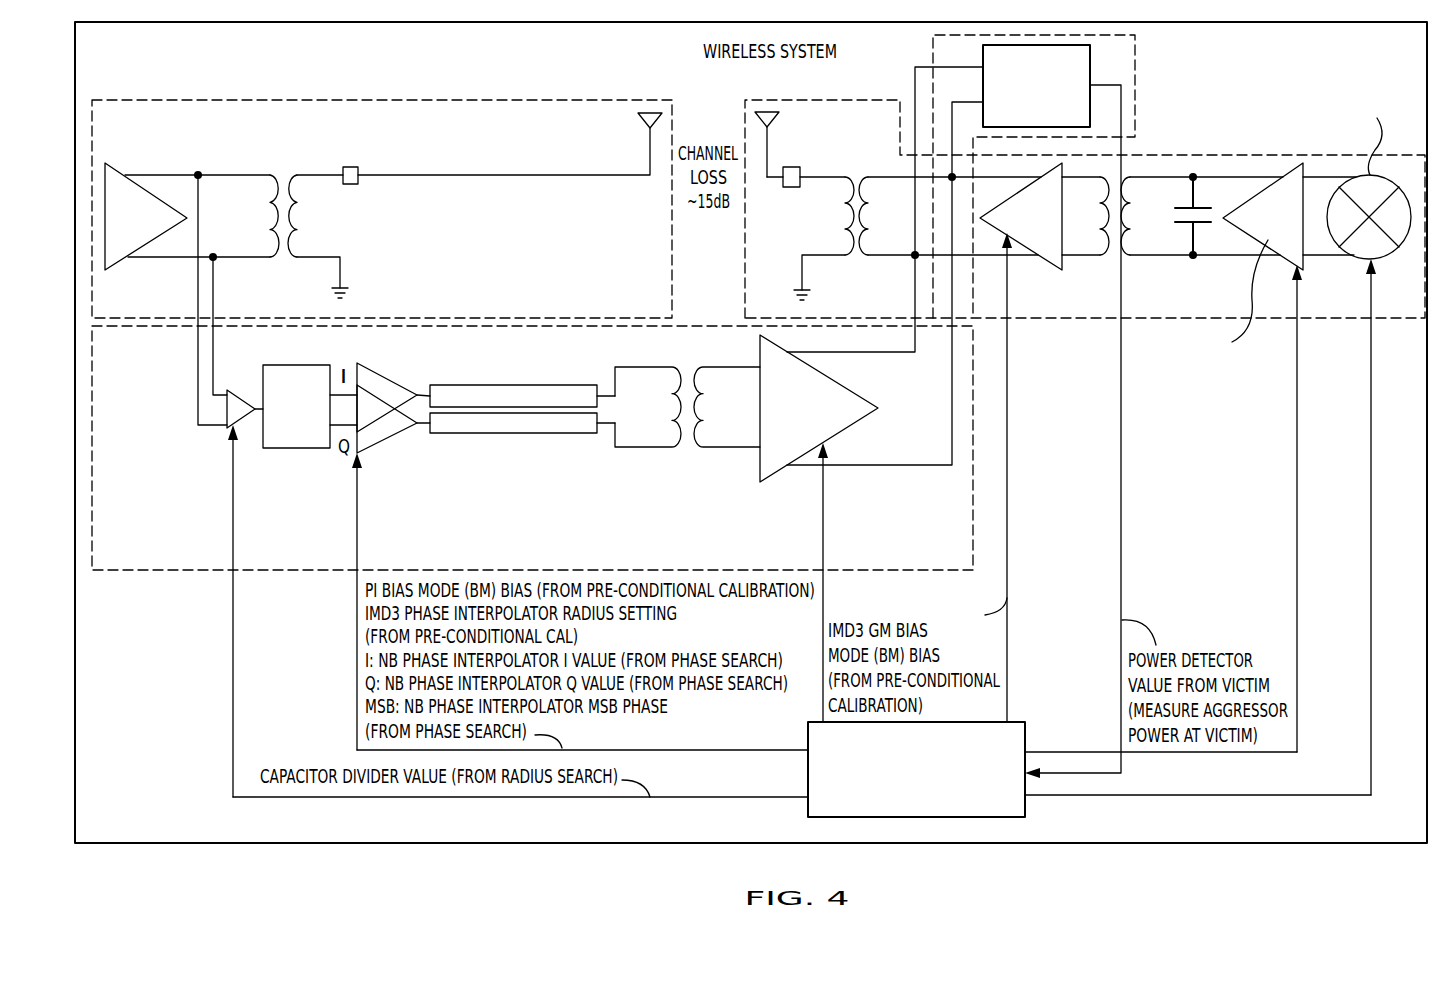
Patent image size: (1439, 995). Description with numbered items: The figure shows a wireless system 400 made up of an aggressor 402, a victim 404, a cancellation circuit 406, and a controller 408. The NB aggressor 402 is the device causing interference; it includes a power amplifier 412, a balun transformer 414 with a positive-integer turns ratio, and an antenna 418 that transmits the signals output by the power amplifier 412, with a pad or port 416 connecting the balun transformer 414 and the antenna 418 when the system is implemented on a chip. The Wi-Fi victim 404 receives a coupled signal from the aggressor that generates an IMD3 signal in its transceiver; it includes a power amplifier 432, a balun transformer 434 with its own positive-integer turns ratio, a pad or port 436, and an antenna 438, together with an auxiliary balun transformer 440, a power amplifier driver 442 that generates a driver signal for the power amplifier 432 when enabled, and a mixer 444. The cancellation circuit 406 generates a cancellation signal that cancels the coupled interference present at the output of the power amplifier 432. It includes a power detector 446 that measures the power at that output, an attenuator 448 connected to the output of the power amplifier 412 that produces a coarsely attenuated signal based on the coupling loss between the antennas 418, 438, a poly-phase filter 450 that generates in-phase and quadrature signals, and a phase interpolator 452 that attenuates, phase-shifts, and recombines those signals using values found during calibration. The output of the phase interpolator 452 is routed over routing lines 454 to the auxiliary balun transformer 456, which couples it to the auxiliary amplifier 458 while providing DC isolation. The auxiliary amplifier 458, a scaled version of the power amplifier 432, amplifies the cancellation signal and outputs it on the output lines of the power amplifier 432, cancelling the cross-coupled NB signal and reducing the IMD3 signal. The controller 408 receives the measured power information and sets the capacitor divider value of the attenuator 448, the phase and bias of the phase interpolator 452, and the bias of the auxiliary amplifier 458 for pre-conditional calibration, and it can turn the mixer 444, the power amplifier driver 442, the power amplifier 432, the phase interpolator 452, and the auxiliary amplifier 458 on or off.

The wireless system 400 is at (153, 814).
The aggressor 402 is at (207, 100).
The victim 404 is at (1338, 155).
The cancellation circuit 406 is at (182, 572).
The controller 408 is at (935, 792).
The power amplifier 412 is at (118, 263).
The balun transformer 414 is at (272, 259).
The pad or port 416 is at (352, 185).
The antenna 418 is at (645, 125).
The power amplifier 432 is at (1045, 262).
The balun transformer 434 is at (868, 177).
The pad or port 436 is at (790, 187).
The antenna 438 is at (772, 122).
The auxiliary balun transformer 440 is at (1130, 257).
The power amplifier driver 442 is at (1289, 230).
The mixer 444 is at (1393, 252).
The power detector 446 is at (1055, 116).
The attenuator 448 is at (227, 412).
The poly-phase filter 450 is at (283, 450).
The phase interpolator 452 is at (380, 440).
The routing lines 454 is at (490, 385).
The auxiliary balun transformer 456 is at (683, 445).
The auxiliary amplifier 458 is at (860, 425).